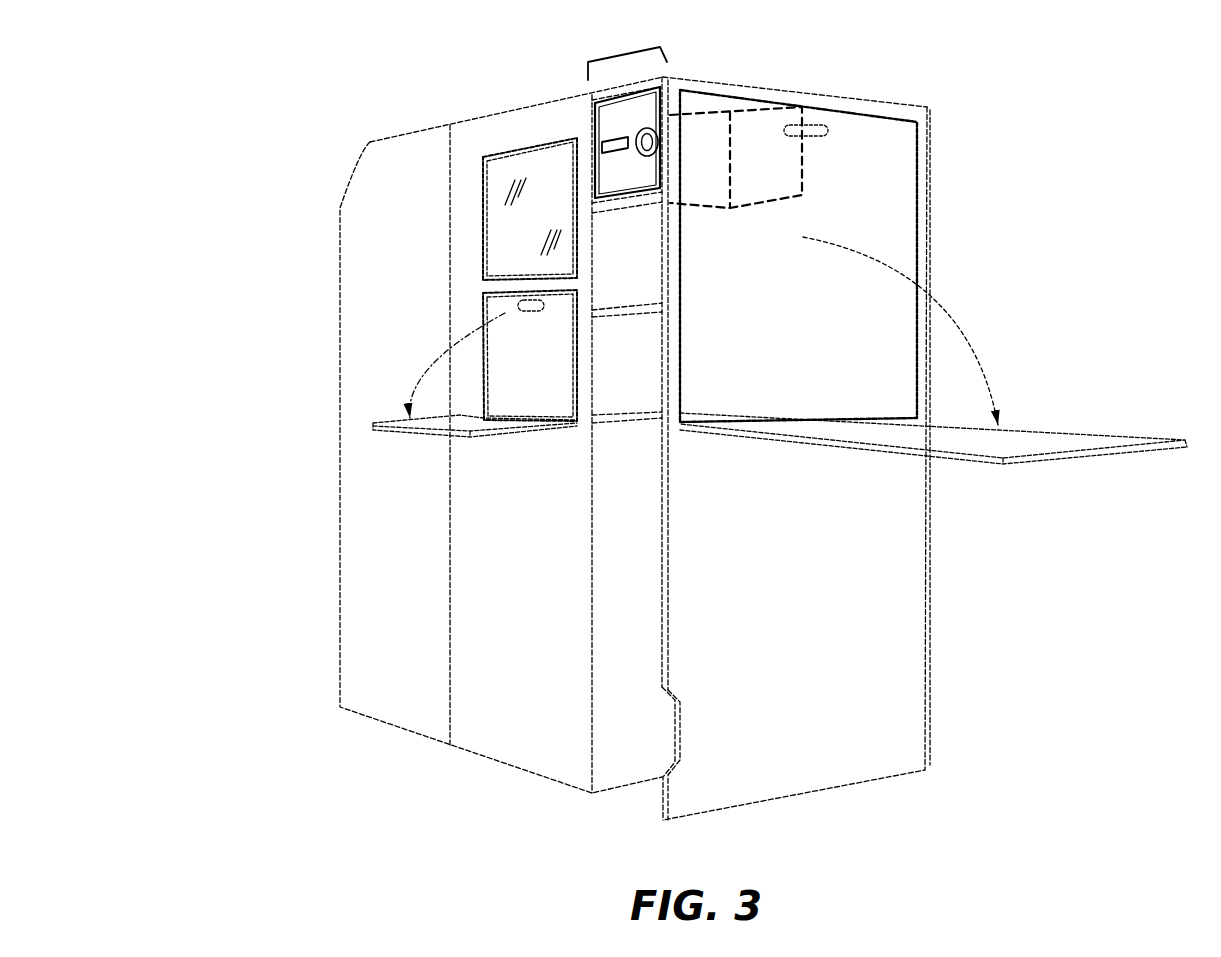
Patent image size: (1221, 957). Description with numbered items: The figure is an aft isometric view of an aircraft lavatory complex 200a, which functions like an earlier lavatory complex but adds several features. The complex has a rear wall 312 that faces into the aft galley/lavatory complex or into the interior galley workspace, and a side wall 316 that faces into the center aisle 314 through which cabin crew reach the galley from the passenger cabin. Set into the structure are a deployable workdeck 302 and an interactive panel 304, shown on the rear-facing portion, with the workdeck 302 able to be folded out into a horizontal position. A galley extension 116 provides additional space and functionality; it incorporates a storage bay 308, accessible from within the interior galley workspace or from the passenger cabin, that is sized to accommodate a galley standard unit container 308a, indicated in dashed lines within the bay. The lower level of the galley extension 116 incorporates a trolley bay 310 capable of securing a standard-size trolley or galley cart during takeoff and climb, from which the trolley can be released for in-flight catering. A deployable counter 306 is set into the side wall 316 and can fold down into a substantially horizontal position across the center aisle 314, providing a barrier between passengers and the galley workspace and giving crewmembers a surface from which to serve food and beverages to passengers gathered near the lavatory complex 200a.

The aircraft lavatory complex 200a is at (124, 63).
The rear wall 312 is at (360, 188).
The interactive panel 304 is at (515, 175).
The deployable workdeck 302 is at (527, 392).
The storage bay 308 is at (620, 255).
The galley extension 116 is at (625, 52).
The galley standard unit container 308a is at (742, 155).
The deployable counter 306 is at (1040, 440).
The side wall 316 is at (903, 690).
The center aisle 314 is at (865, 828).
The trolley bay 310 is at (636, 773).